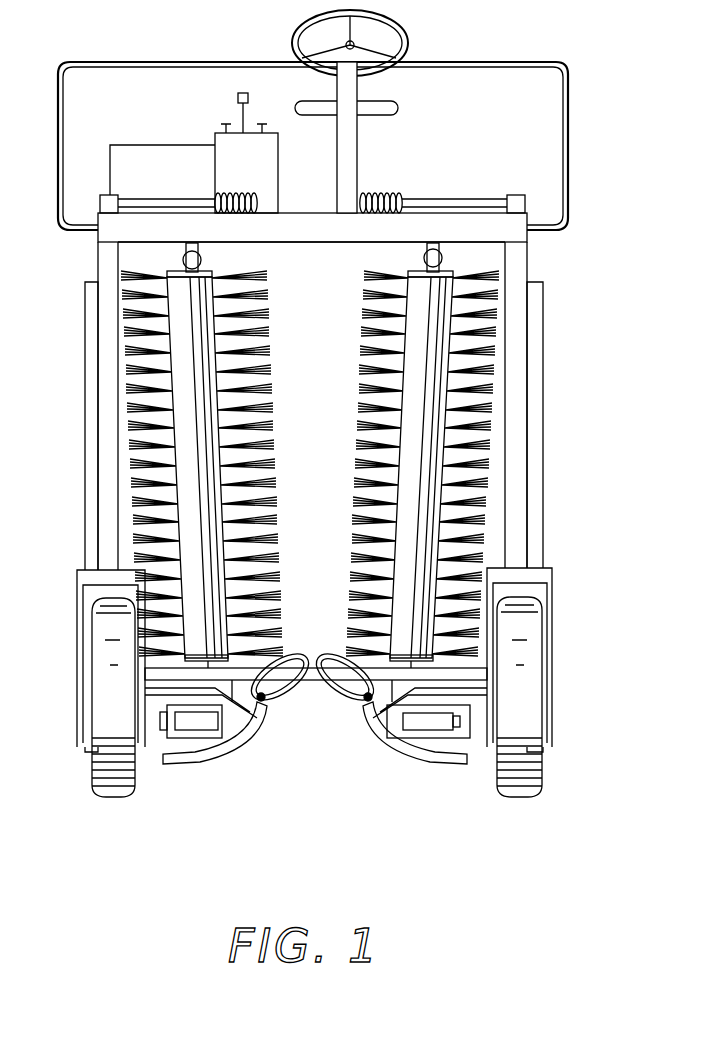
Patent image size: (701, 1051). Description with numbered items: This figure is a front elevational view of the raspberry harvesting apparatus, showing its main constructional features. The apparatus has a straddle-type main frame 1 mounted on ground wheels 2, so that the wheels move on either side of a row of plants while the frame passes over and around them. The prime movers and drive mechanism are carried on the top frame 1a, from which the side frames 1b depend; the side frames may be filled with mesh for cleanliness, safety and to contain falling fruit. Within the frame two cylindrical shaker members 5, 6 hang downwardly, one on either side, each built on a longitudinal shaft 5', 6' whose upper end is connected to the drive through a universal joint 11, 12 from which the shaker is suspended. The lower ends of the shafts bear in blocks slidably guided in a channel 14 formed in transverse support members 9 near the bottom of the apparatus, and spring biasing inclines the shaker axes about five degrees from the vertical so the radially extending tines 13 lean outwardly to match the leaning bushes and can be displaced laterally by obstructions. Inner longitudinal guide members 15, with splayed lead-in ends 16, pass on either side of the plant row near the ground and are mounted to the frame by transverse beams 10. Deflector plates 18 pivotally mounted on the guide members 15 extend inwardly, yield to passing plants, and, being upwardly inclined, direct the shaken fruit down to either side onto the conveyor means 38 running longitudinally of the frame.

The main frame 1 is at (565, 466).
The top frame 1a is at (515, 234).
The side frame 1b is at (110, 357).
The ground wheel 2 is at (533, 758).
The cylindrical shaker member 5 is at (464, 469).
The longitudinal shaft 5' is at (389, 262).
The cylindrical shaker member 6 is at (169, 469).
The longitudinal shaft 6' is at (219, 261).
The support member 9 is at (148, 678).
The transverse beam 10 is at (157, 698).
The universal joint 11 is at (470, 262).
The universal joint 12 is at (183, 261).
The tine 13 is at (487, 529).
The channel 14 is at (480, 668).
The inner longitudinal guide member 15 is at (245, 746).
The lead-in end 16 is at (443, 760).
The deflector plate 18 is at (343, 692).
The conveyor means 38 is at (192, 722).